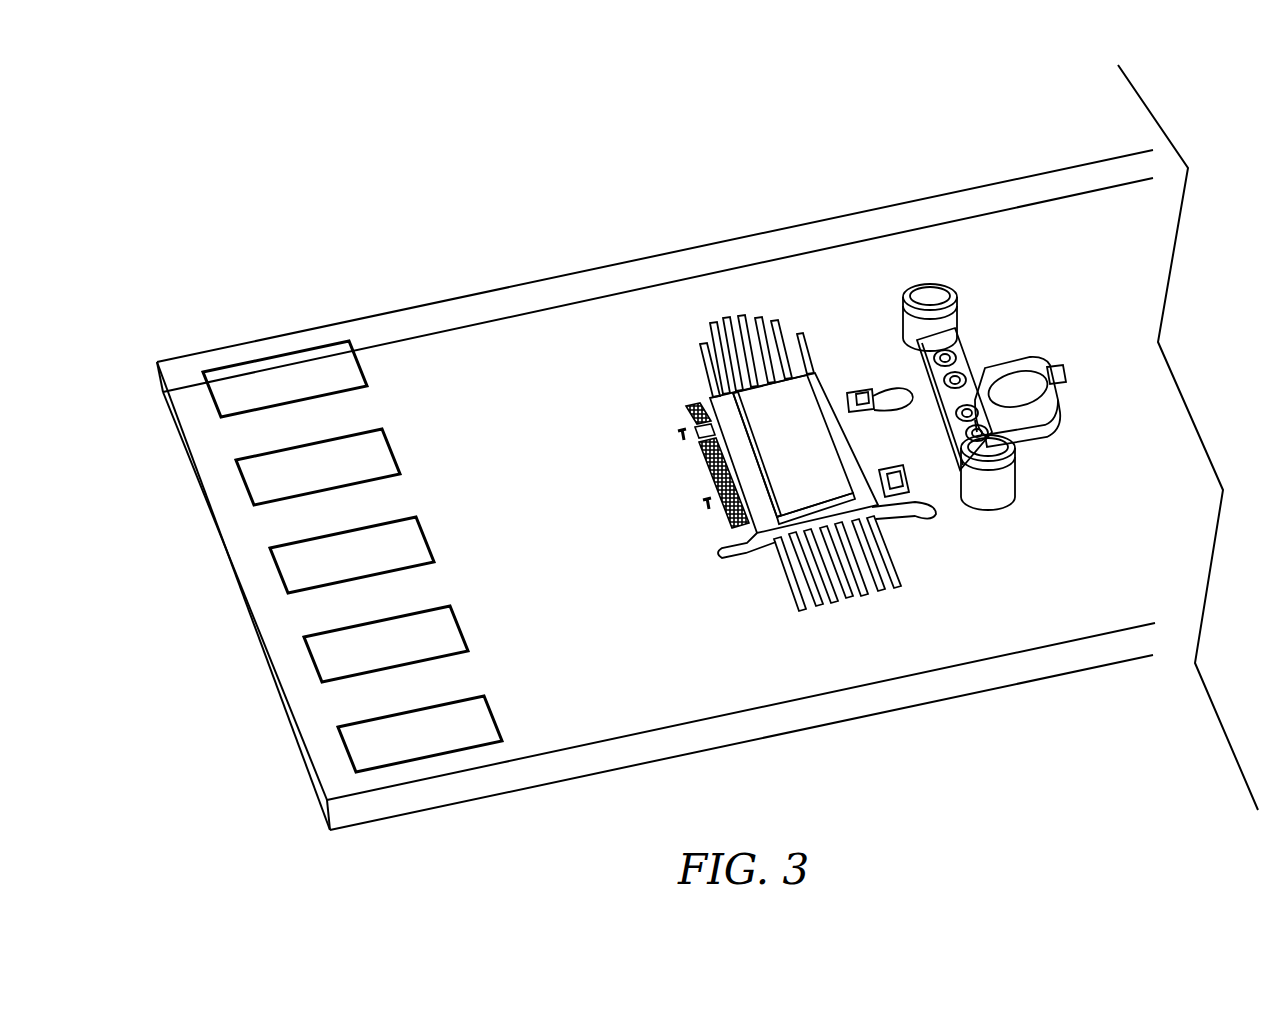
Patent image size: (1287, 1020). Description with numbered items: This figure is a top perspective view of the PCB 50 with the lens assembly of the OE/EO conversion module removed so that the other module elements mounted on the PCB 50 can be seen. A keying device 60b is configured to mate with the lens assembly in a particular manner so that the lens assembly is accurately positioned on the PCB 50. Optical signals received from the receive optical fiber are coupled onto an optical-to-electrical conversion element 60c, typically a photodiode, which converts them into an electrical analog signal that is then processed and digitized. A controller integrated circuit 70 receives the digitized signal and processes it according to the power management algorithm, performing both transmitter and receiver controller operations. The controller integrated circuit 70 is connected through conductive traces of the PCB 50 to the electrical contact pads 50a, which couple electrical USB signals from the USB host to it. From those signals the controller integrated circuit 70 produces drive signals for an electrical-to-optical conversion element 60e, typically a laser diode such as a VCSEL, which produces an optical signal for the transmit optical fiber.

The PCB 50 is at (1024, 586).
The electrical contact pads 50a is at (300, 372).
The controller integrated circuit 70 is at (801, 450).
The keying device 60b is at (987, 377).
The optical-to-electrical conversion element 60c is at (893, 467).
The electrical-to-optical conversion element 60e is at (857, 390).